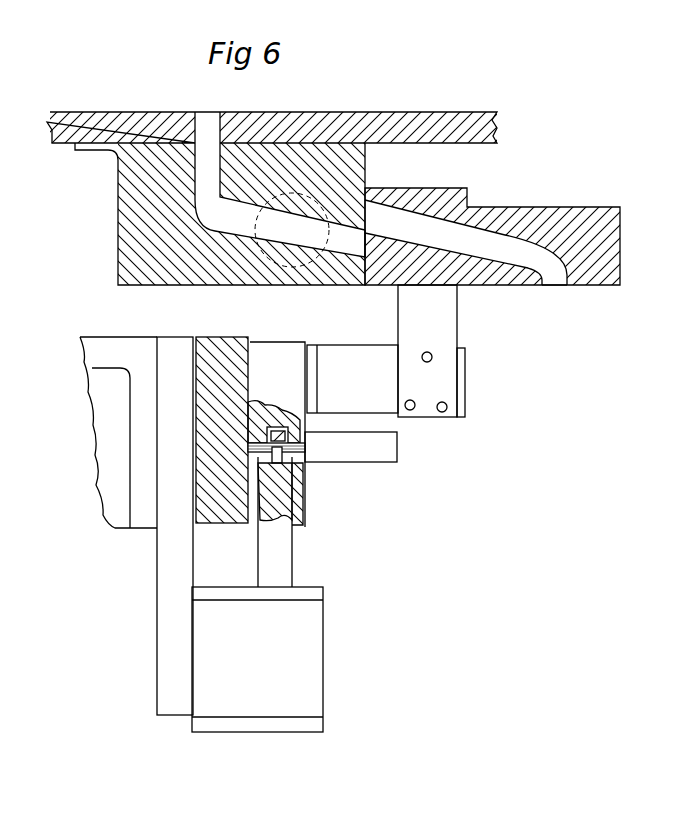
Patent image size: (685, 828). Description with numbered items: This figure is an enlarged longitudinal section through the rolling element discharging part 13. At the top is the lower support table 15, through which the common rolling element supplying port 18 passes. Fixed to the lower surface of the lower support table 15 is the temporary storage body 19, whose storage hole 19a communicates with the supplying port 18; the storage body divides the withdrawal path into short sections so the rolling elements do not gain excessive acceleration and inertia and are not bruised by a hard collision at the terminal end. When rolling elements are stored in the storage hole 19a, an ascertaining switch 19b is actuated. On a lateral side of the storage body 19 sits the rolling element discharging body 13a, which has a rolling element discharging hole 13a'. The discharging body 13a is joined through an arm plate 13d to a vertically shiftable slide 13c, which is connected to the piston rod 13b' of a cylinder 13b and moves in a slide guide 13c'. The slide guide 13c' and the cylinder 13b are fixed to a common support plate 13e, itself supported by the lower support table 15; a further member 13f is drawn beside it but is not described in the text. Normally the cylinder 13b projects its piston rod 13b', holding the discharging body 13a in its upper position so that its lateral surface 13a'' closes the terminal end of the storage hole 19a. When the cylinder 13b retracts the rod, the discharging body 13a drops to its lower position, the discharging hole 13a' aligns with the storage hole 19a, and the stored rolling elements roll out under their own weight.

The rolling element discharging part 13 is at (609, 187).
The rolling element discharging body 13a is at (511, 236).
The rolling element discharging hole 13a' is at (568, 304).
The lateral surface 13a'' is at (349, 277).
The cylinder 13b is at (282, 659).
The piston rod 13b' is at (295, 464).
The slide 13c is at (303, 463).
The slide guide 13c' is at (175, 454).
The arm plate 13d is at (440, 386).
The support plate 13e is at (165, 654).
The frame member 13f is at (105, 444).
The lower support table 15 is at (428, 118).
The rolling element supplying port 18 is at (212, 104).
The temporary storage body 19 is at (134, 178).
The storage hole 19a is at (199, 209).
The ascertaining switch 19b is at (245, 283).